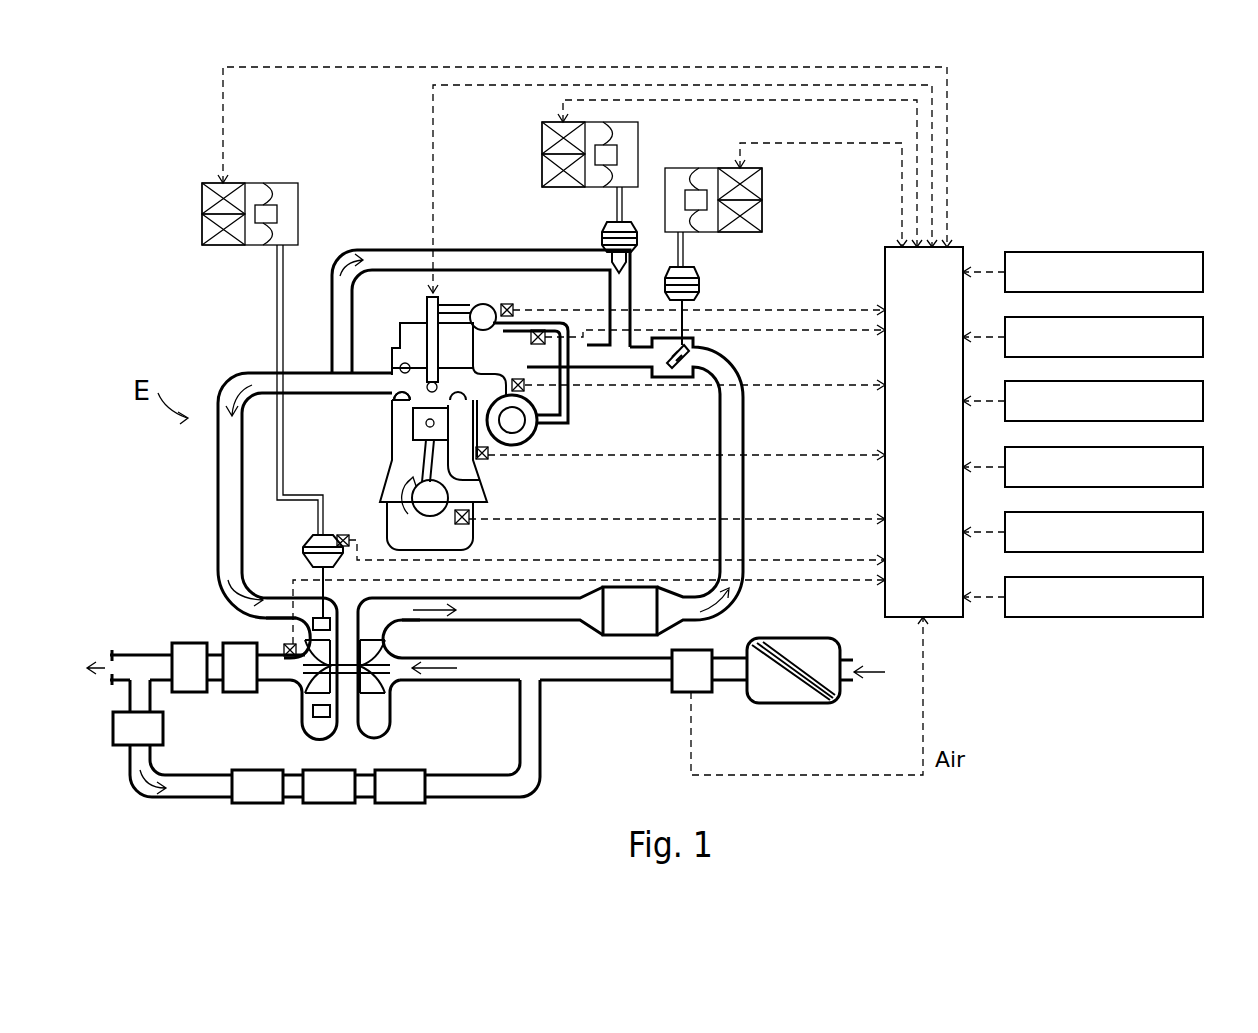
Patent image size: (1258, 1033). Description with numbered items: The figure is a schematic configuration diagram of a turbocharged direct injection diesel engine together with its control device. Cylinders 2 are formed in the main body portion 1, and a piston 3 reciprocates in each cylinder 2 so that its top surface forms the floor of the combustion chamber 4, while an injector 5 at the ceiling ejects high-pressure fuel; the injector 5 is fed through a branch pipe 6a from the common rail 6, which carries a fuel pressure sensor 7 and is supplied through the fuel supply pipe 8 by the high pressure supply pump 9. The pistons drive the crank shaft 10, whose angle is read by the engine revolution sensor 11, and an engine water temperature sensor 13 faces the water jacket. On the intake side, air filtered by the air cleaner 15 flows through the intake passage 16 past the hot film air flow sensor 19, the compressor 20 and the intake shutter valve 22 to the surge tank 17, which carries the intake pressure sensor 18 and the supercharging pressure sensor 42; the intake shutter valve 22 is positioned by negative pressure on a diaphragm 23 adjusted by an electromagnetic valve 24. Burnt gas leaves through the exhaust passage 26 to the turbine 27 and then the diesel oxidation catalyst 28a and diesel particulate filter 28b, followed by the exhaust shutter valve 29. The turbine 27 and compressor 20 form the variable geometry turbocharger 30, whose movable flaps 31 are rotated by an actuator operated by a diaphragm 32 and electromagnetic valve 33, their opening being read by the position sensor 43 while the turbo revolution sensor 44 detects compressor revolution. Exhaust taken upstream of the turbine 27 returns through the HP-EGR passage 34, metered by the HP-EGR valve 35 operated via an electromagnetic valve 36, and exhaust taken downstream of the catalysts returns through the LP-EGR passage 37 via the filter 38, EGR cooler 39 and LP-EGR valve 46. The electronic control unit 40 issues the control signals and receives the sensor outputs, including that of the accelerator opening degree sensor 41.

The main body portion 1 is at (486, 545).
The cylinder 2 is at (448, 470).
The piston 3 is at (417, 426).
The combustion chamber 4 is at (427, 398).
The injector 5 is at (426, 308).
The common rail 6 is at (486, 305).
The branch pipe 6a is at (455, 300).
The fuel pressure sensor 7 is at (505, 303).
The fuel supply pipe 8 is at (570, 413).
The high pressure supply pump 9 is at (522, 432).
The crank shaft 10 is at (420, 528).
The engine revolution sensor 11 is at (1205, 597).
The engine water temperature sensor 13 is at (492, 460).
The air cleaner 15 is at (797, 705).
The intake passage 16 is at (744, 425).
The surge tank 17 is at (512, 348).
The intake pressure sensor 18 is at (527, 388).
The hot film air flow sensor 19 is at (1205, 337).
The compressor 20 is at (387, 688).
The intake shutter valve 22 is at (686, 357).
The diaphragm 23 is at (700, 282).
The electromagnetic valve 24 is at (762, 200).
The exhaust passage 26 is at (220, 502).
The turbine 27 is at (305, 690).
The diesel oxidation catalyst 28a is at (237, 694).
The diesel particulate filter 28b is at (187, 694).
The exhaust shutter valve 29 is at (127, 746).
The turbocharger 30 is at (427, 725).
The movable flap 31 is at (300, 628).
The diaphragm 32 is at (304, 550).
The electromagnetic valve 33 is at (223, 246).
The HP-EGR passage 34 is at (386, 249).
The HP-EGR valve 35 is at (601, 233).
The electromagnetic valve 36 is at (640, 137).
The LP-EGR passage 37 is at (194, 798).
The filter 38 is at (257, 805).
The EGR cooler 39 is at (332, 805).
The electronic control unit 40 is at (947, 620).
The accelerator opening degree sensor 41 is at (1205, 272).
The supercharging pressure sensor 42 is at (1205, 401).
The position sensor 43 is at (1205, 467).
The turbo revolution sensor 44 is at (1205, 532).
The LP-EGR valve 46 is at (398, 805).